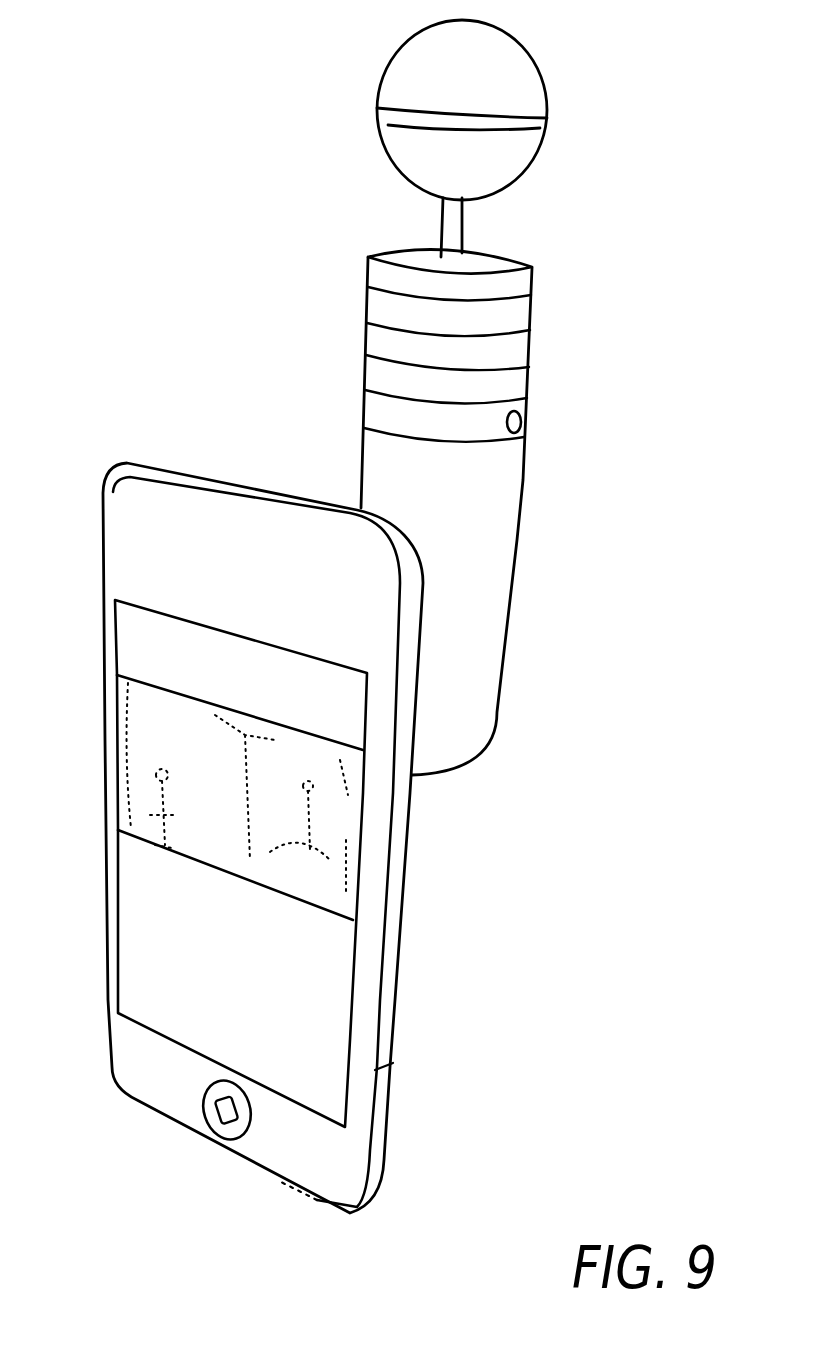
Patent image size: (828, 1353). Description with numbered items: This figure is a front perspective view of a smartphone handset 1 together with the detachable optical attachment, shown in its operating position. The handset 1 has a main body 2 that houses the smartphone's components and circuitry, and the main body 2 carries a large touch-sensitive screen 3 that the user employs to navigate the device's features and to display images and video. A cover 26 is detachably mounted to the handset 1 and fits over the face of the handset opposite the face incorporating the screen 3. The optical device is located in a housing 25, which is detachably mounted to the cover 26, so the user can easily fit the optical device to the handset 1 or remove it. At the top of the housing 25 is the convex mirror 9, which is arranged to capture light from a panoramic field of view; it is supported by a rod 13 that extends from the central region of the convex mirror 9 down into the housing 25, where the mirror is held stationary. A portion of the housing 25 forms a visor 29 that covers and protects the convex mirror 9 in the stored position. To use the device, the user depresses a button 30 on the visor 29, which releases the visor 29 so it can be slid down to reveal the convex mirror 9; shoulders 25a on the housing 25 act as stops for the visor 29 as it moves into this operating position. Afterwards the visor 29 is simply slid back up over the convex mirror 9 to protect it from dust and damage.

The handset 1 is at (392, 1128).
The main body 2 is at (134, 1098).
The screen 3 is at (140, 893).
The cover 26 is at (395, 993).
The housing 25 is at (490, 713).
The shoulders 25a is at (525, 437).
The visor 29 is at (532, 318).
The button 30 is at (527, 423).
The rod 13 is at (463, 232).
The convex mirror 9 is at (523, 167).